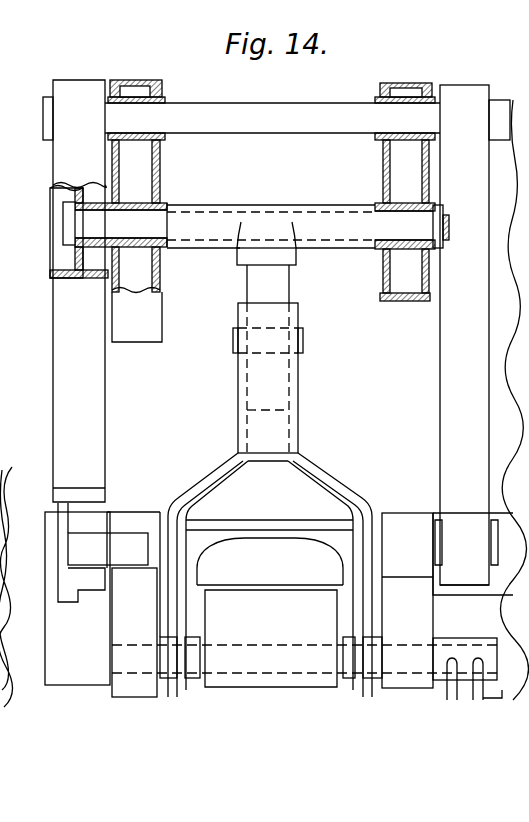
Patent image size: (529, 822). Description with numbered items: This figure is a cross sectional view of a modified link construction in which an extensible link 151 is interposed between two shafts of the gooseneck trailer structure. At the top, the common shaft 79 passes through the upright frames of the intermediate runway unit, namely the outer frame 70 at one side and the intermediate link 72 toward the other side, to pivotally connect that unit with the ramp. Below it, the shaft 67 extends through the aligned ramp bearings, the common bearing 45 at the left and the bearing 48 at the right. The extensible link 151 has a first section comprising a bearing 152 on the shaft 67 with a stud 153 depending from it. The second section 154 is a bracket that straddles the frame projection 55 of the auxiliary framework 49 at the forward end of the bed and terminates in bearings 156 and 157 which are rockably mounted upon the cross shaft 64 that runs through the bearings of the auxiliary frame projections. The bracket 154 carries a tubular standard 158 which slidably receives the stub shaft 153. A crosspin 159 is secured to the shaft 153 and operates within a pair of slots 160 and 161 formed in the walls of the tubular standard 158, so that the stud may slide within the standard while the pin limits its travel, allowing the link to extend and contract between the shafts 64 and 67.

The bearing 45 is at (80, 240).
The bearing 48 is at (412, 250).
The auxiliary framework 49 is at (73, 683).
The projection 55 is at (307, 687).
The cross shaft 64 is at (238, 684).
The shaft 67 is at (153, 222).
The outer frame 70 is at (62, 386).
The intermediate link 72 is at (450, 377).
The shaft 79 is at (290, 112).
The extensible link 151 is at (232, 423).
The bearing 152 is at (310, 205).
The stud 153 is at (257, 289).
The second section 154 is at (336, 480).
The bearing 156 is at (172, 681).
The bearing 157 is at (370, 681).
The tubular standard 158 is at (266, 374).
The crosspin 159 is at (305, 335).
The slot 160 is at (243, 384).
The slot 161 is at (293, 380).